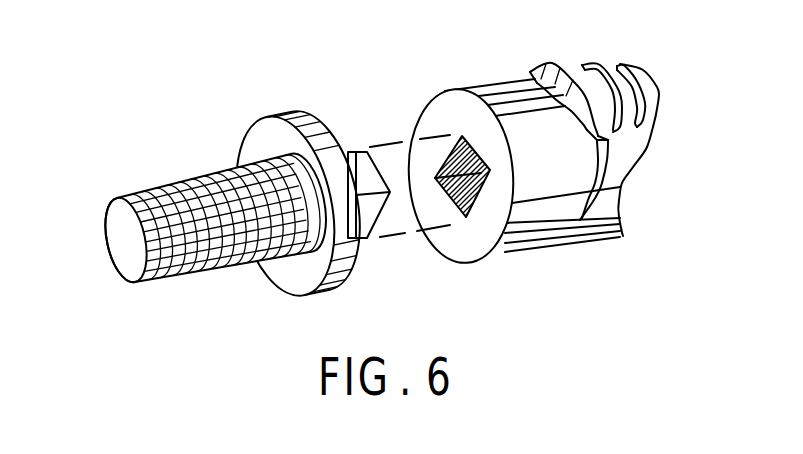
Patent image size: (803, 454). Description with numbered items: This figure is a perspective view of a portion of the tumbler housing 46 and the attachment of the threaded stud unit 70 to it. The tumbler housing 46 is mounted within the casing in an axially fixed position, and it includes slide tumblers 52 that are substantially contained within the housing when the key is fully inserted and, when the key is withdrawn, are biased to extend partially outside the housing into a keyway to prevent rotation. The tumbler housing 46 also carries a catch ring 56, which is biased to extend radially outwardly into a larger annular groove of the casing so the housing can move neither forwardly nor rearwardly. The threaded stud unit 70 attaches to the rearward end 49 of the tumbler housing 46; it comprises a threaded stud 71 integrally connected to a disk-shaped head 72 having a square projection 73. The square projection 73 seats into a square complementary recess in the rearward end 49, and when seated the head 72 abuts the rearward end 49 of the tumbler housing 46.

The threaded stud unit 70 is at (166, 134).
The threaded stud 71 is at (131, 191).
The head 72 is at (307, 117).
The projection 73 is at (353, 151).
The rearward end 49 is at (420, 110).
The catch ring 56 is at (537, 68).
The slide tumblers 52 is at (617, 67).
The tumbler housing 46 is at (614, 271).